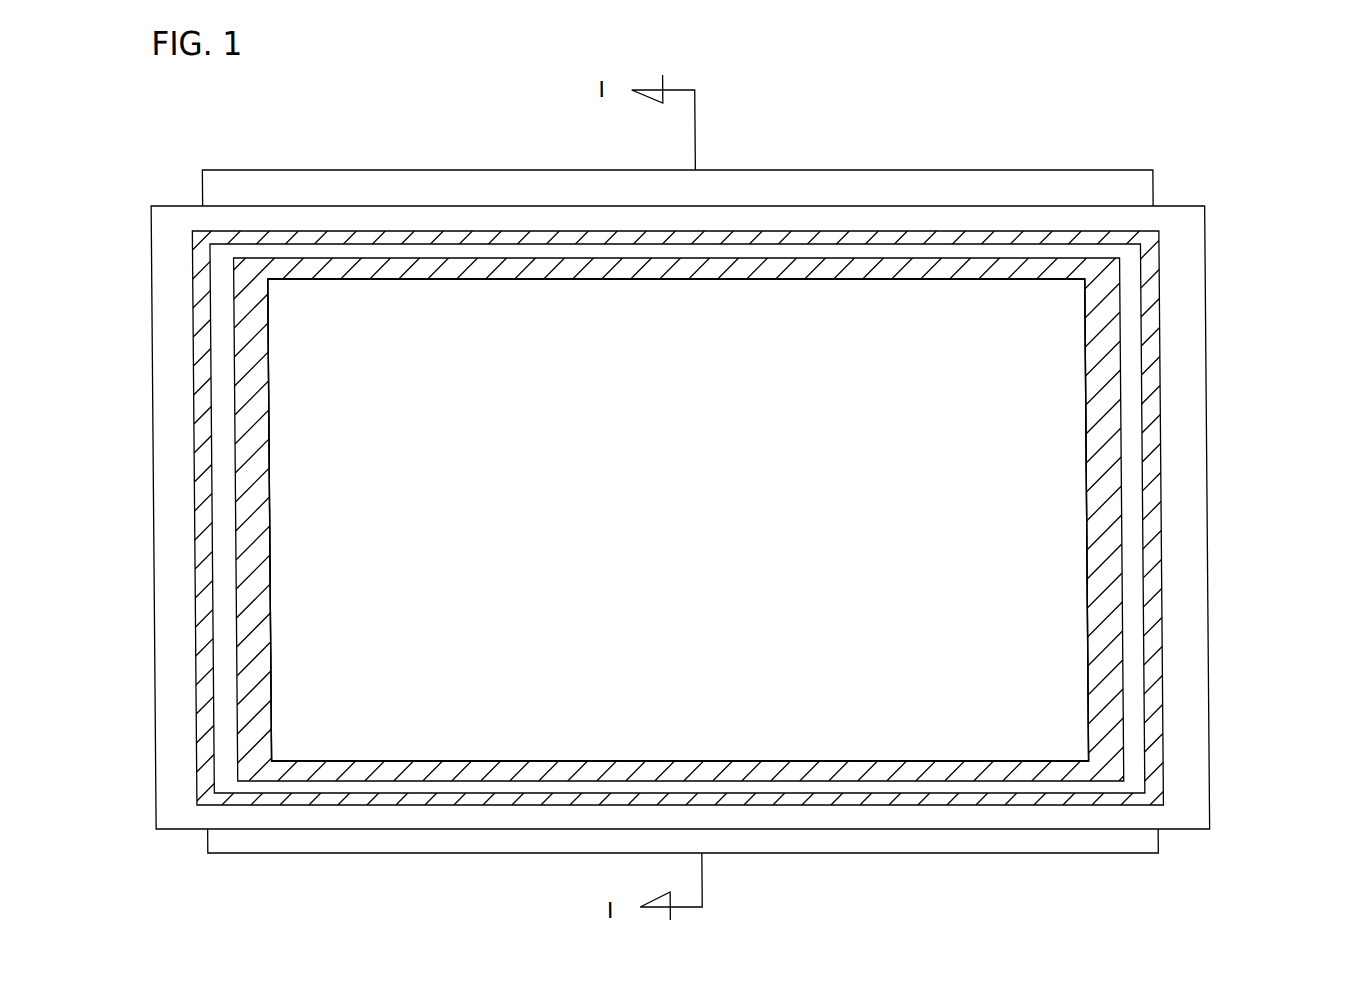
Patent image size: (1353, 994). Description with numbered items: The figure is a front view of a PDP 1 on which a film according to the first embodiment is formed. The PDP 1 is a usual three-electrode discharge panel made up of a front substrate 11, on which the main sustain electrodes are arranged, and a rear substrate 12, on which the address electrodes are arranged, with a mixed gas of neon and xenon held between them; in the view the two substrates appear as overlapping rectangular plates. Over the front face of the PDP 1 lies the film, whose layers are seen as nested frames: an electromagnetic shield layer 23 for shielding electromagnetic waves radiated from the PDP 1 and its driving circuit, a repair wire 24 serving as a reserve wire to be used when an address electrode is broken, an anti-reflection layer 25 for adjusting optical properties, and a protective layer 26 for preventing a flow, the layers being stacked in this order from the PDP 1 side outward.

The PDP 1 is at (150, 157).
The front substrate 11 is at (653, 213).
The rear substrate 12 is at (466, 192).
The electromagnetic shield layer 23 is at (912, 272).
The repair wire 24 is at (805, 243).
The anti-reflection layer 25 is at (1052, 533).
The protective layer 26 is at (803, 520).